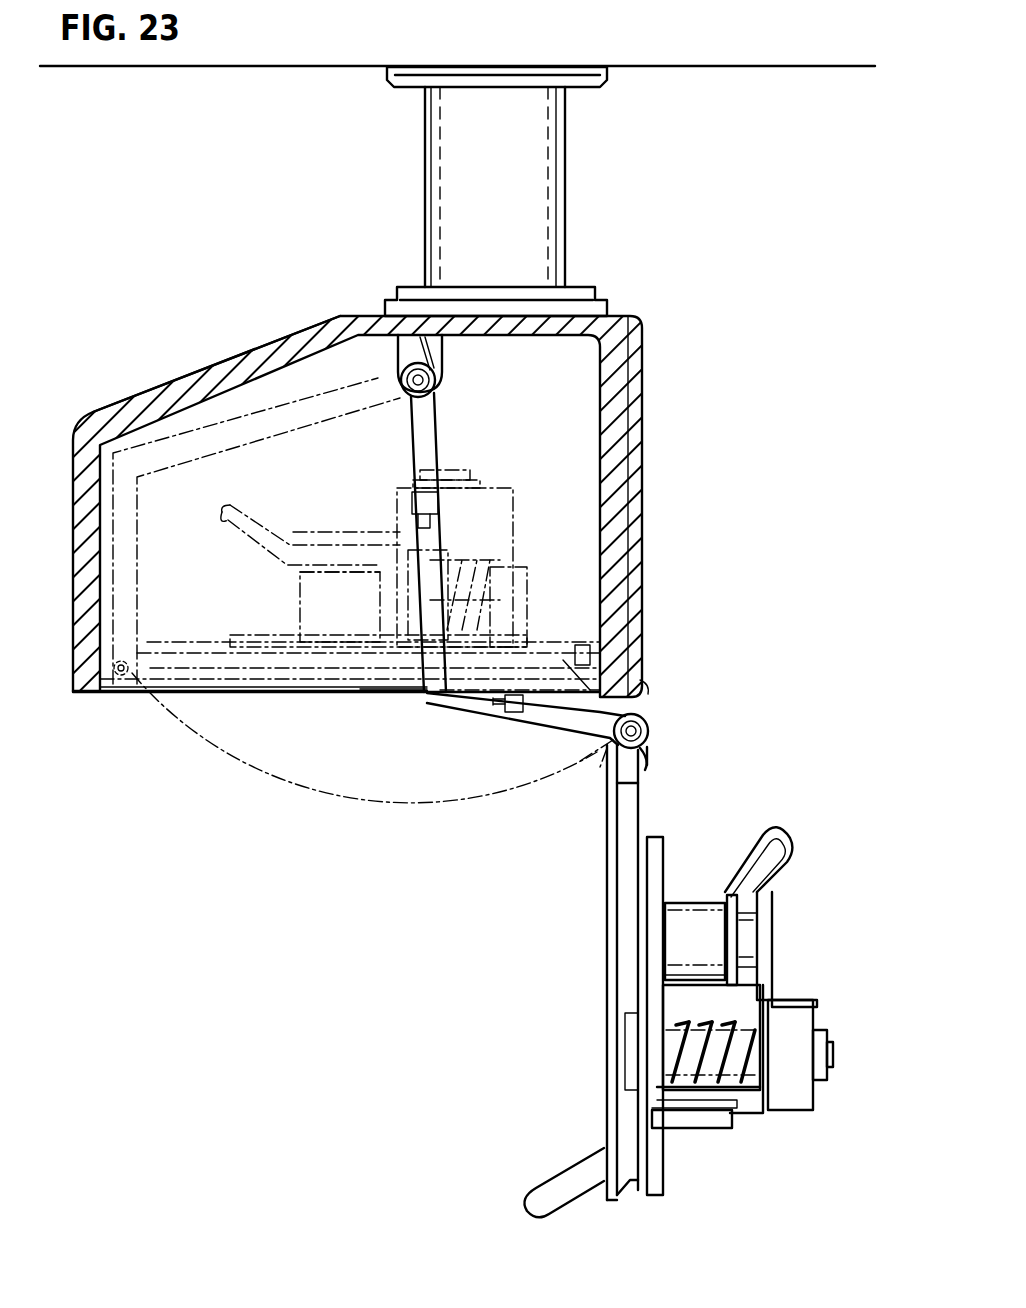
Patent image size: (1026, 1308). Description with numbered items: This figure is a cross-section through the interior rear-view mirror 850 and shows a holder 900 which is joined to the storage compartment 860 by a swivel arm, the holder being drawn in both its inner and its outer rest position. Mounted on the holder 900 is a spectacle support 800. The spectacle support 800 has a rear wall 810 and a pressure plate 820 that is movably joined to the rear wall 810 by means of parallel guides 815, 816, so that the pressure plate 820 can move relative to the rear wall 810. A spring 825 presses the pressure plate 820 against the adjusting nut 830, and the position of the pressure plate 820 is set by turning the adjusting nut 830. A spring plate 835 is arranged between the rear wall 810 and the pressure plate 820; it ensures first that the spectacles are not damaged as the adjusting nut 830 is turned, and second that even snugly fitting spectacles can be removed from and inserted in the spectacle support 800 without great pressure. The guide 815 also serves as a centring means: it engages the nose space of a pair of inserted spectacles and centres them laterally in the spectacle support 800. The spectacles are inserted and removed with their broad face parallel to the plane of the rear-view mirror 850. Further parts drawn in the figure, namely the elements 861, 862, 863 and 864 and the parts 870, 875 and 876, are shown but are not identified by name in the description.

The spectacle support 800 is at (765, 1115).
The rear wall 810 is at (650, 868).
The parallel guide 815 is at (693, 905).
The parallel guide 816 is at (694, 1122).
The pressure plate 820 is at (767, 957).
The spring 825 is at (720, 1016).
The adjusting nut 830 is at (800, 1013).
The spring plate 835 is at (727, 938).
The rear-view mirror 850 is at (640, 481).
The storage compartment 860 is at (240, 356).
The pivot 861 is at (105, 695).
The arm member 862 is at (396, 695).
The bottom wall 863 is at (301, 697).
The phantom position of arm 864 is at (276, 426).
The handle 870 is at (563, 660).
The upper pulley and strap 875 is at (438, 431).
The lower pulley and strap 876 is at (547, 713).
The holder 900 is at (628, 806).